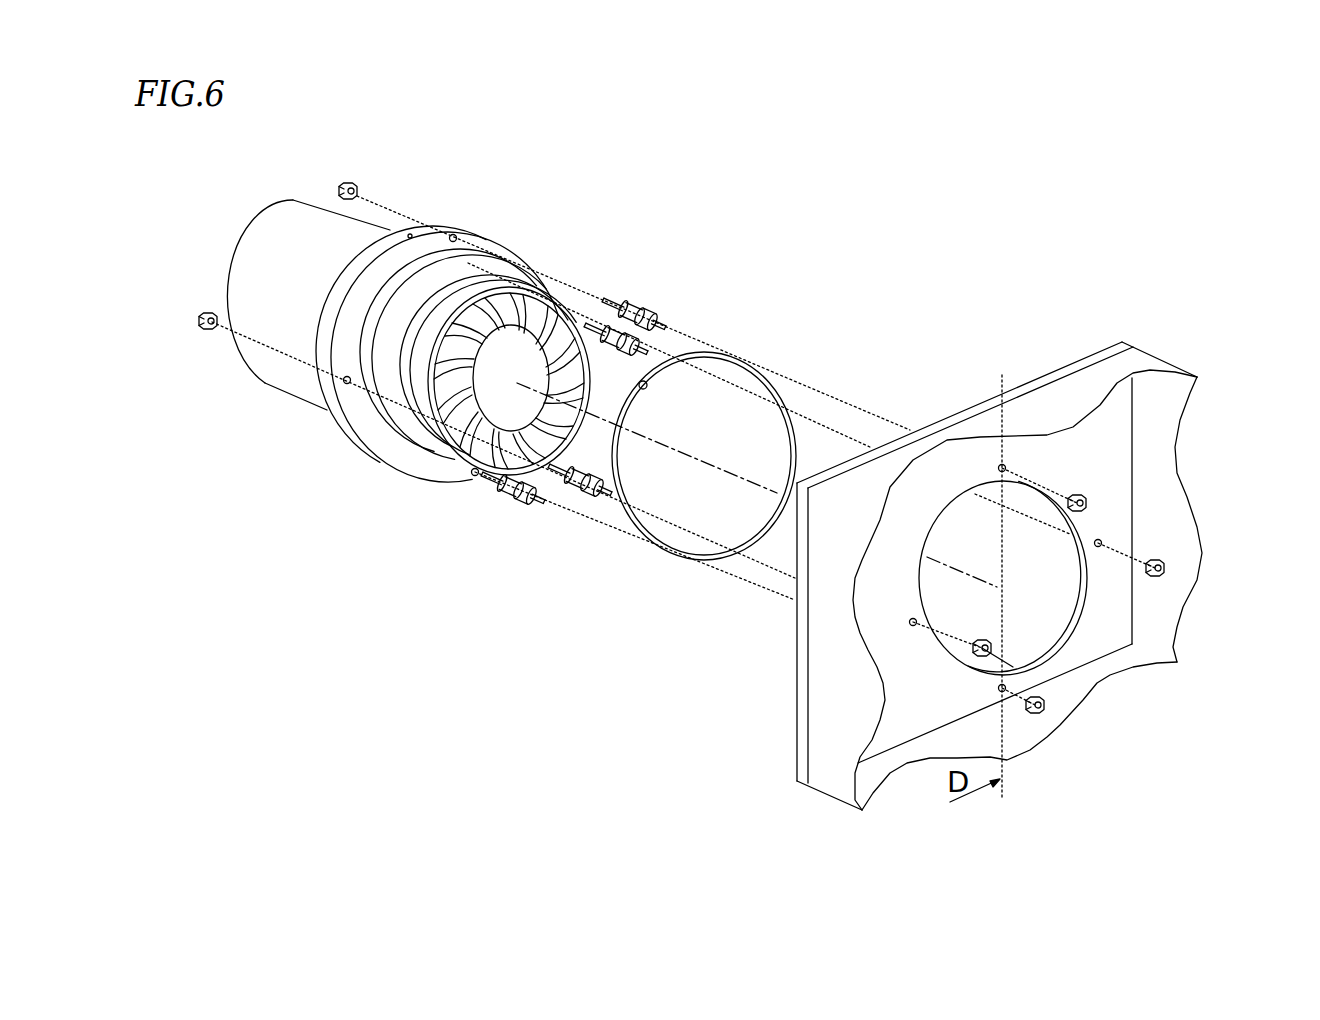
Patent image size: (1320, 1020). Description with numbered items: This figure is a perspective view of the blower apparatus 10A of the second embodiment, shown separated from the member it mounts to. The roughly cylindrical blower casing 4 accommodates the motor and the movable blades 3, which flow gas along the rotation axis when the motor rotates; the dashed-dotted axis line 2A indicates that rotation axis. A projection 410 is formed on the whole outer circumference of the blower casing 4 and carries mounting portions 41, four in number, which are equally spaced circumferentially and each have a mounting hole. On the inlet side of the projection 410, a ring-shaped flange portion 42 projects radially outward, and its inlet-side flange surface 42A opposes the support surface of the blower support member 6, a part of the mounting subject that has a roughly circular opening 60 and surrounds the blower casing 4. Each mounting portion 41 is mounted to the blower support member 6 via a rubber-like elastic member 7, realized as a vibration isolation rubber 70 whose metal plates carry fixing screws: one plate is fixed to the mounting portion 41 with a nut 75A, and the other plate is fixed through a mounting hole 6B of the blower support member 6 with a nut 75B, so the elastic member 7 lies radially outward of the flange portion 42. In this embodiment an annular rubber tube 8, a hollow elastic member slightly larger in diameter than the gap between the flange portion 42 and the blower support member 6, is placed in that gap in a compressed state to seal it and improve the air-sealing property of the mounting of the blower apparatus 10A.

The blower apparatus 10A is at (338, 503).
The blower casing 4 is at (297, 396).
The mounting portions 41 is at (453, 233).
The projection 410 is at (410, 233).
The flange portion 42 is at (432, 255).
The flange surface 42A is at (470, 263).
The movable blades 3 is at (552, 297).
The elastic member 7 is at (650, 302).
The vibration isolation rubber 70 is at (628, 364).
The rubber tube 8 is at (773, 392).
The nut 75A is at (200, 313).
The nut 75B is at (1046, 704).
The blower support member 6 is at (810, 672).
The mounting hole 6B is at (913, 619).
The opening 60 is at (1065, 632).
The axis line 2A is at (960, 570).